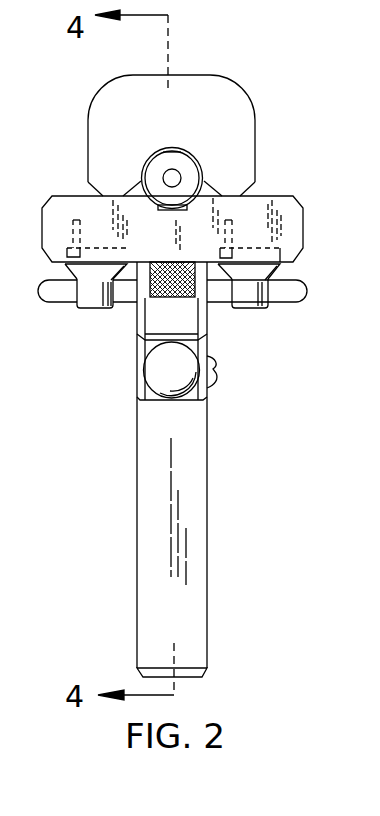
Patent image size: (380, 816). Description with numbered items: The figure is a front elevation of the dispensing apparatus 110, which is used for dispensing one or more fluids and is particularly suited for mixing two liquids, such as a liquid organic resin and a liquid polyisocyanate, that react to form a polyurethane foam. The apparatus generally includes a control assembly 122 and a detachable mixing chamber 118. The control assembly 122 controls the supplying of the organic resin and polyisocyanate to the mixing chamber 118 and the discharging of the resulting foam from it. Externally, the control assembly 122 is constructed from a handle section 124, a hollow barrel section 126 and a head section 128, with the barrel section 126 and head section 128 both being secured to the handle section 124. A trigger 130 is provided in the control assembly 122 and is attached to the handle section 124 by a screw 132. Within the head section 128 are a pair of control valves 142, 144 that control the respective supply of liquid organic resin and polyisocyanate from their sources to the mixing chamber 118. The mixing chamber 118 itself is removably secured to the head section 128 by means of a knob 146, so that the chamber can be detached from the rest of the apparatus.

The dispensing apparatus 110 is at (243, 66).
The detachable mixing chamber 118 is at (192, 182).
The control assembly 122 is at (70, 190).
The handle section 124 is at (206, 537).
The hollow barrel section 126 is at (182, 88).
The head section 128 is at (293, 228).
The trigger 130 is at (182, 367).
The screw 132 is at (214, 382).
The control valve 142 is at (248, 300).
The control valve 144 is at (91, 299).
The knob 146 is at (170, 298).